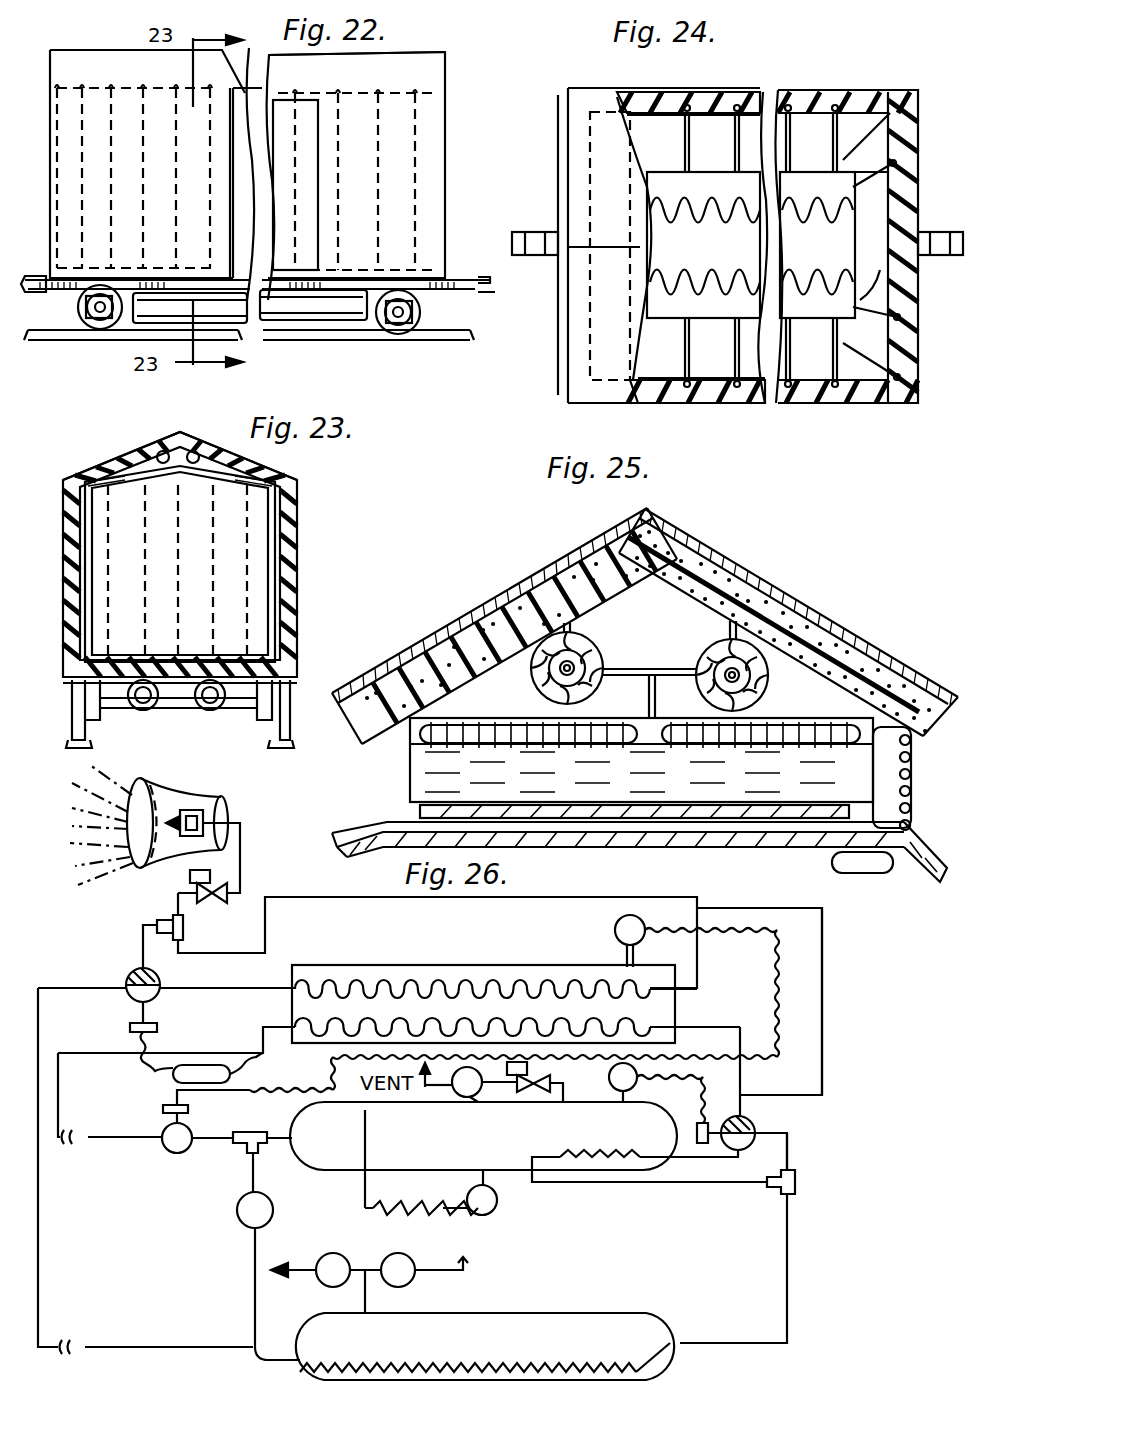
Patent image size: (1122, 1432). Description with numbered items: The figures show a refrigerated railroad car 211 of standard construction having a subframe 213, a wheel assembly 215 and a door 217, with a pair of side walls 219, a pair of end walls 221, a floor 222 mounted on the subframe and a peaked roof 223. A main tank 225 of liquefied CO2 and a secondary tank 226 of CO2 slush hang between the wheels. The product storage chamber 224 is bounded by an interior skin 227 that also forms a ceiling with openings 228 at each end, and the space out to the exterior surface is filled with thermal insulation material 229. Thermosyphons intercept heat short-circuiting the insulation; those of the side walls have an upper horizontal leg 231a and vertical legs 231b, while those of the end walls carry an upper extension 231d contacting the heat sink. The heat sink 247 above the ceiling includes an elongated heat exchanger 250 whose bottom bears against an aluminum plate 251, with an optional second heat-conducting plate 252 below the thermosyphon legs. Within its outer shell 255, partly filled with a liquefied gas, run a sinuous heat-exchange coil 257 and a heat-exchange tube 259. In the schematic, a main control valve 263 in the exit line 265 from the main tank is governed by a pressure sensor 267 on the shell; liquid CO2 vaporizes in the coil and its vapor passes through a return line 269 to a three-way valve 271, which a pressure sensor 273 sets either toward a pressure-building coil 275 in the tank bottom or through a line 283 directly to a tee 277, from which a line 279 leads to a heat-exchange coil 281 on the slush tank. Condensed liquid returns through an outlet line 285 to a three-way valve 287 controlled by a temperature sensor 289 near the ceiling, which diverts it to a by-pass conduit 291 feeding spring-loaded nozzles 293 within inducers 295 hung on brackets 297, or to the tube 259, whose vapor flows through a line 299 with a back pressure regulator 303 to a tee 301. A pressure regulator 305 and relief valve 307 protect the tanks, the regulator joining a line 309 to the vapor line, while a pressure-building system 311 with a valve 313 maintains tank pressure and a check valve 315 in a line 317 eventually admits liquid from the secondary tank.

In FIG. 22, the railroad car 211 is at (275, 154).
In FIG. 22, the subframe 213 is at (460, 272).
In FIG. 22, the wheel assembly 215 is at (68, 335).
In FIG. 23, the wheel assembly 215 is at (63, 705).
In FIG. 22, the door 217 is at (245, 95).
In FIG. 22, the side walls 219 is at (70, 135).
In FIG. 23, the side walls 219 is at (300, 558).
In FIG. 22, the end walls 221 is at (458, 140).
In FIG. 24, the end walls 221 is at (568, 152).
In FIG. 23, the floor 222 is at (235, 650).
In FIG. 22, the peaked roof 223 is at (417, 58).
In FIG. 23, the peaked roof 223 is at (118, 455).
In FIG. 25, the peaked roof 223 is at (672, 530).
In FIG. 23, the product storage chamber 224 is at (160, 570).
In FIG. 23, the main tank 225 is at (212, 712).
In FIG. 26, the main tank 225 is at (460, 1155).
In FIG. 22, the secondary tank 226 is at (336, 322).
In FIG. 23, the secondary tank 226 is at (145, 712).
In FIG. 26, the secondary tank 226 is at (535, 1300).
In FIG. 24, the interior skin 227 is at (718, 105).
In FIG. 23, the interior skin 227 is at (72, 505).
In FIG. 24, the openings 228 is at (895, 300).
In FIG. 24, the thermal insulation material 229 is at (815, 95).
In FIG. 23, the thermal insulation material 229 is at (265, 472).
In FIG. 25, the thermal insulation material 229 is at (458, 605).
In FIG. 24, the upper horizontal leg 231a is at (648, 97).
In FIG. 25, the upper horizontal leg 231a is at (578, 830).
In FIG. 22, the vertical legs 231b is at (122, 150).
In FIG. 23, the vertical legs 231b is at (85, 587).
In FIG. 24, the upper extension 231d is at (880, 100).
In FIG. 23, the upper extension 231d is at (283, 519).
In FIG. 25, the heat sink 247 is at (400, 808).
In FIG. 25, the heat exchanger 250 is at (400, 726).
In FIG. 26, the heat exchanger 250 is at (475, 961).
In FIG. 25, the aluminum plate 251 is at (775, 812).
In FIG. 25, the second heat-conducting plate 252 is at (680, 822).
In FIG. 24, the outer shell 255 is at (925, 212).
In FIG. 25, the outer shell 255 is at (412, 767).
In FIG. 26, the outer shell 255 is at (340, 940).
In FIG. 24, the heat-exchange coil 257 is at (710, 300).
In FIG. 25, the heat-exchange coil 257 is at (528, 728).
In FIG. 26, the heat-exchange coil 257 is at (345, 1022).
In FIG. 24, the heat-exchange tube 259 is at (717, 197).
In FIG. 25, the heat-exchange tube 259 is at (795, 732).
In FIG. 26, the heat-exchange tube 259 is at (360, 968).
In FIG. 26, the main control valve 263 is at (163, 1122).
In FIG. 26, the exit line 265 is at (280, 1134).
In FIG. 26, the pressure sensor 267 is at (617, 935).
In FIG. 26, the return line 269 is at (752, 1028).
In FIG. 26, the three-way valve 271 is at (757, 1128).
In FIG. 26, the pressure sensor 273 is at (613, 1090).
In FIG. 26, the pressure-building coil 275 is at (645, 1152).
In FIG. 26, the tee 277 is at (795, 1188).
In FIG. 26, the line 279 is at (760, 1322).
In FIG. 26, the heat-exchange coil 281 is at (580, 1373).
In FIG. 26, the line 283 is at (803, 1150).
In FIG. 26, the outlet line 285 is at (40, 1020).
In FIG. 26, the three-way valve 287 is at (128, 985).
In FIG. 25, the temperature sensor 289 is at (885, 873).
In FIG. 26, the temperature sensor 289 is at (240, 1058).
In FIG. 26, the by-pass conduit 291 is at (143, 925).
In FIG. 25, the spring-loaded nozzles 293 is at (560, 672).
In FIG. 26, the spring-loaded nozzles 293 is at (195, 810).
In FIG. 25, the inducers 295 is at (603, 664).
In FIG. 26, the inducers 295 is at (162, 797).
In FIG. 25, the brackets 297 is at (578, 628).
In FIG. 26, the line 299 is at (682, 896).
In FIG. 26, the tee 301 is at (163, 920).
In FIG. 26, the back pressure regulator 303 is at (212, 905).
In FIG. 26, the pressure regulator 305 is at (525, 1092).
In FIG. 26, the relief valve 307 is at (480, 1102).
In FIG. 26, the line 309 is at (822, 998).
In FIG. 26, the pressure-building system 311 is at (360, 1190).
In FIG. 26, the valve 313 is at (498, 1201).
In FIG. 26, the check valve 315 is at (237, 1215).
In FIG. 26, the line 317 is at (255, 1303).